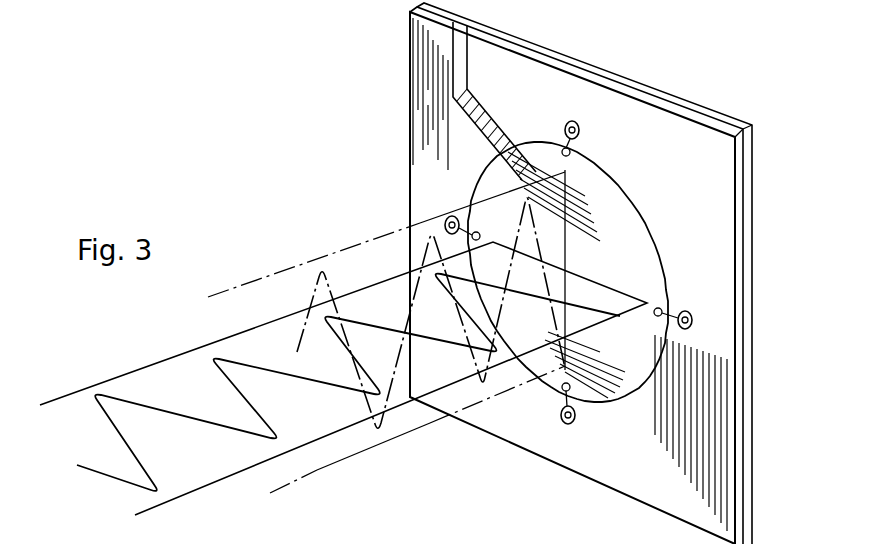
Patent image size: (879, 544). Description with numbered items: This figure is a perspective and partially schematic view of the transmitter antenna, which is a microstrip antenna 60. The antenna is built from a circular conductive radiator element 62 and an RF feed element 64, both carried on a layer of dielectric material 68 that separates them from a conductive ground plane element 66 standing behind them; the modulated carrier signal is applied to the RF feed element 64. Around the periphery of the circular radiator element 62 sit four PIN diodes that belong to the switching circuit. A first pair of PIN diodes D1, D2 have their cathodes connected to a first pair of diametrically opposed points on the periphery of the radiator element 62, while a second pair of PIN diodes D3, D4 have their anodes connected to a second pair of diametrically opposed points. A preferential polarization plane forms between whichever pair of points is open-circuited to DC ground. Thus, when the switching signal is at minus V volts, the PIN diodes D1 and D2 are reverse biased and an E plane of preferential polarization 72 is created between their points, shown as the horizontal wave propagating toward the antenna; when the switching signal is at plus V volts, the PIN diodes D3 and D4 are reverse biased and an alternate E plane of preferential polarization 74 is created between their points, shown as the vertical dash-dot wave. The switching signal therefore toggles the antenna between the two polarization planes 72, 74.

The microstrip antenna 60 is at (396, 76).
The circular conductive radiator element 62 is at (634, 203).
The RF feed element 64 is at (462, 50).
The conductive ground plane element 66 is at (666, 91).
The layer of dielectric material 68 is at (607, 76).
The E plane of preferential polarization 72 is at (40, 372).
The alternate E plane of preferential polarization 74 is at (322, 512).
The PIN diode D1 is at (690, 310).
The PIN diode D2 is at (448, 216).
The PIN diode D3 is at (566, 122).
The PIN diode D4 is at (575, 424).